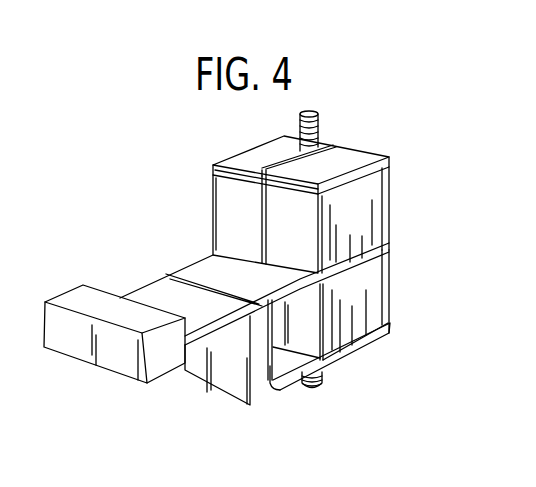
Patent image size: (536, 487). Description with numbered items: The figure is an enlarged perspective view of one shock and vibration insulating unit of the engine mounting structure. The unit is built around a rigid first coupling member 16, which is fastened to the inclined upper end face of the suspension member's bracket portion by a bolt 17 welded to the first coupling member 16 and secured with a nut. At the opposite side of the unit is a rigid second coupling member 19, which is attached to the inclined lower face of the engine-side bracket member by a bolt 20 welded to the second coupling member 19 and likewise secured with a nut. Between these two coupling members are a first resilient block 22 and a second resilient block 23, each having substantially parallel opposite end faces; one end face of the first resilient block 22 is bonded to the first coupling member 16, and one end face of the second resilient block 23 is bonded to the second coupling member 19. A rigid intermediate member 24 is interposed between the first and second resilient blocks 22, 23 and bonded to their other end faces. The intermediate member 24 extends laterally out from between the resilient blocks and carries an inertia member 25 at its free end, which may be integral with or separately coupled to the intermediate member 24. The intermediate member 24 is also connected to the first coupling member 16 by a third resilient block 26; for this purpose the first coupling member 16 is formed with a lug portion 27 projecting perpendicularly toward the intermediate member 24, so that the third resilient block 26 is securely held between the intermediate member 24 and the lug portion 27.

The first coupling member 16 is at (365, 345).
The bolt 17 is at (312, 385).
The second coupling member 19 is at (393, 155).
The bolt 20 is at (315, 125).
The first resilient block 22 is at (390, 287).
The second resilient block 23 is at (387, 203).
The intermediate member 24 is at (182, 272).
The inertia member 25 is at (72, 292).
The third resilient block 26 is at (243, 345).
The lug portion 27 is at (272, 390).